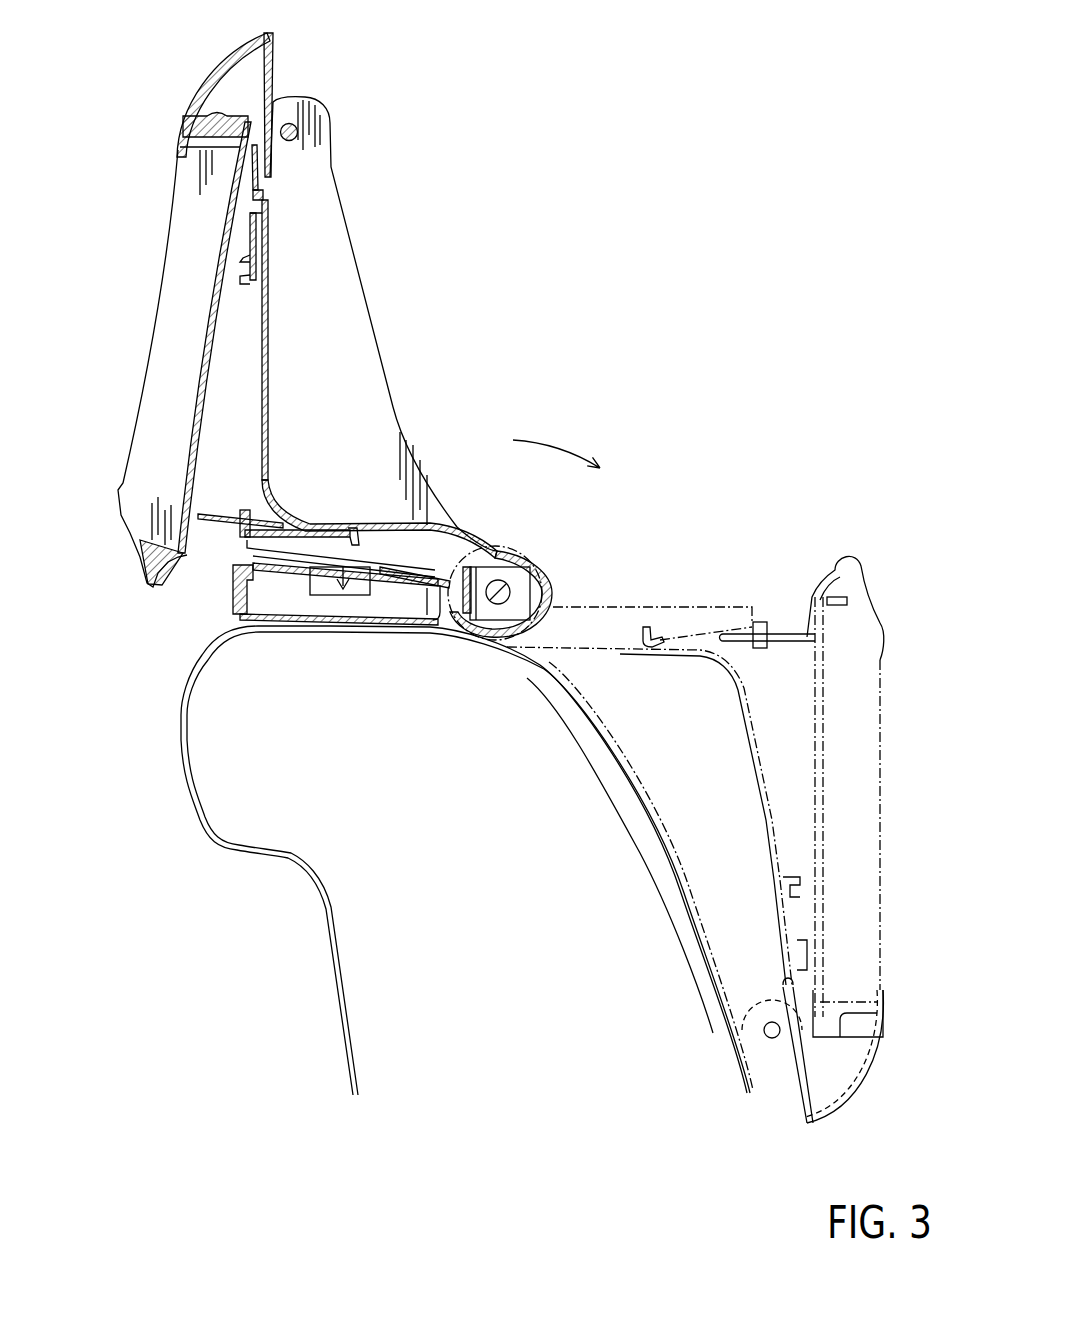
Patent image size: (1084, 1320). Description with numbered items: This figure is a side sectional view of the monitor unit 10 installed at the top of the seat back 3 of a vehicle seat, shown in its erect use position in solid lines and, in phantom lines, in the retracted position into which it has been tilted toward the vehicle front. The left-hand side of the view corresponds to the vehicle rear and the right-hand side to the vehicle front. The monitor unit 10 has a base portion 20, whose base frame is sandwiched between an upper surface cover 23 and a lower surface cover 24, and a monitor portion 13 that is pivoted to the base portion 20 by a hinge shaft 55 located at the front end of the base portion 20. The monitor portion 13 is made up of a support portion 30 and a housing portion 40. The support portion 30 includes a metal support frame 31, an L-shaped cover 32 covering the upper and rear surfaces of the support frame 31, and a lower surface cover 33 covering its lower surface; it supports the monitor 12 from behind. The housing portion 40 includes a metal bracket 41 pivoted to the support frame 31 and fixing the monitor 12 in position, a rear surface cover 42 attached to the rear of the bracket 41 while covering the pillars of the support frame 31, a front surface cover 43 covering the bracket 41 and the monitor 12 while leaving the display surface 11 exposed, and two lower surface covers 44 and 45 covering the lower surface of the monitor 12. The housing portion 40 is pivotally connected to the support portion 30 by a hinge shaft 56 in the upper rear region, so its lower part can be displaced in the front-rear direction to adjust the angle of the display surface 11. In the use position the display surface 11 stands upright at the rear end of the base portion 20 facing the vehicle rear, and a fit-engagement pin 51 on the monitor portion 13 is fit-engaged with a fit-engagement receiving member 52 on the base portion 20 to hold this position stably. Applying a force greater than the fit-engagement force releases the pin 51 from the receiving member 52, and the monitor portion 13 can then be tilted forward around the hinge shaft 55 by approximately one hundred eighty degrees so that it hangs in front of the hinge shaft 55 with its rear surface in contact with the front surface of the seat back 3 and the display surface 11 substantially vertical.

The seat back 3 is at (361, 1006).
The monitor unit 10 is at (353, 103).
The display surface 11 is at (172, 213).
The monitor 12 is at (175, 278).
The monitor portion 13 is at (455, 220).
The base portion 20 is at (222, 601).
The upper surface cover 23 is at (295, 570).
The lower surface cover 24 is at (337, 623).
The support portion 30 is at (278, 295).
The support frame 31 is at (257, 167).
The L-shaped cover 32 is at (387, 523).
The lower surface cover 33 is at (410, 567).
The housing portion 40 is at (367, 254).
The bracket 41 is at (202, 370).
The rear surface cover 42 is at (307, 240).
The front surface cover 43 is at (190, 90).
The lower surface cover 44 is at (223, 513).
The lower surface cover 45 is at (292, 530).
The fit-engagement pin 51 is at (376, 553).
The fit-engagement receiving member 52 is at (357, 592).
The hinge shaft 55 is at (498, 600).
The hinge shaft 56 is at (288, 124).